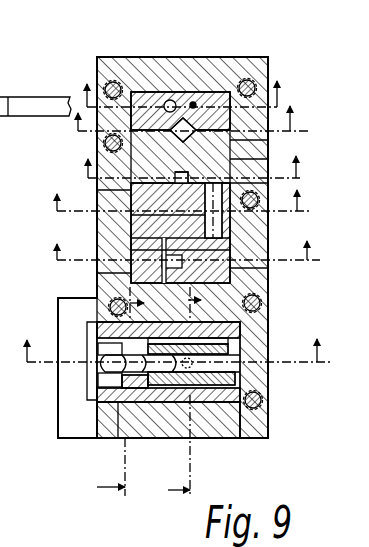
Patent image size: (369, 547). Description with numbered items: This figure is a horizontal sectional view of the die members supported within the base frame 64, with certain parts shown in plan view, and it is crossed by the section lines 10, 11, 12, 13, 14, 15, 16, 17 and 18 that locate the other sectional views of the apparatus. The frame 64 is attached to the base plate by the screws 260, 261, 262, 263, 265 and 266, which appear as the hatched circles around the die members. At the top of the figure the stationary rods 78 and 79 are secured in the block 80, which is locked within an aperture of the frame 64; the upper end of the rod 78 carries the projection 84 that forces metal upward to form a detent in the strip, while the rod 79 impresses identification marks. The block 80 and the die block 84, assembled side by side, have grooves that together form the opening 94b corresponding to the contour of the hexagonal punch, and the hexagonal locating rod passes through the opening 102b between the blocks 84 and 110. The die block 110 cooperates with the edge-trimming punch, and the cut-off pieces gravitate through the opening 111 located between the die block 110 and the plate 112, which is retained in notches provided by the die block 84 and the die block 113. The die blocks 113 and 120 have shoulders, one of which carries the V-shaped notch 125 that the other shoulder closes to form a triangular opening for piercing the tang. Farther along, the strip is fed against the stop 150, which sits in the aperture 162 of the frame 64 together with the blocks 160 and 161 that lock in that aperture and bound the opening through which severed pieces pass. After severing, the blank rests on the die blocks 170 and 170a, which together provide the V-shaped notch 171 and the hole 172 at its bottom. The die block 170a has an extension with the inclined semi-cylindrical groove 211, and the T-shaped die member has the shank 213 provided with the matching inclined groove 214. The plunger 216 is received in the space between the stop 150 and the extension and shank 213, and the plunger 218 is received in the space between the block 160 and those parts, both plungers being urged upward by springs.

The base frame 64 is at (58, 437).
The stationary rod 78 is at (191, 92).
The stationary rod 79 is at (169, 100).
The block 80 is at (230, 115).
The die block 84 is at (196, 104).
The opening 94b is at (265, 137).
The opening 102b is at (106, 190).
The die block 110 is at (133, 222).
The opening 111 is at (235, 223).
The plate 112 is at (268, 183).
The die block 113 is at (235, 246).
The die block 120 is at (133, 273).
The V-shaped notch 125 is at (255, 270).
The stop 150 is at (244, 420).
The block 160 is at (262, 305).
The block 161 is at (264, 317).
The aperture 162 is at (250, 378).
The die block 170 is at (232, 330).
The die block 170a is at (156, 402).
The V-shaped notch 171 is at (182, 369).
The hole 172 is at (194, 395).
The inclined semi-cylindrical groove 211 is at (118, 406).
The shank 213 is at (88, 379).
The inclined semi-cylindrical groove 214 is at (145, 362).
The plunger 216 is at (104, 403).
The plunger 218 is at (87, 343).
The screw 260 is at (114, 86).
The screw 261 is at (113, 153).
The screw 262 is at (108, 307).
The screw 263 is at (250, 80).
The screw 265 is at (260, 295).
The screw 266 is at (264, 403).
The section line 10- 10 is at (179, 80).
The section line 11- 11 is at (180, 116).
The section line 12- 12 is at (191, 161).
The section line 13- 13 is at (175, 198).
The section line 14- 14 is at (175, 239).
The section line 15- 15 is at (169, 338).
The section line 16- 16 is at (147, 303).
The section line 17- 17 is at (192, 406).
The section line 18- 18 is at (111, 481).